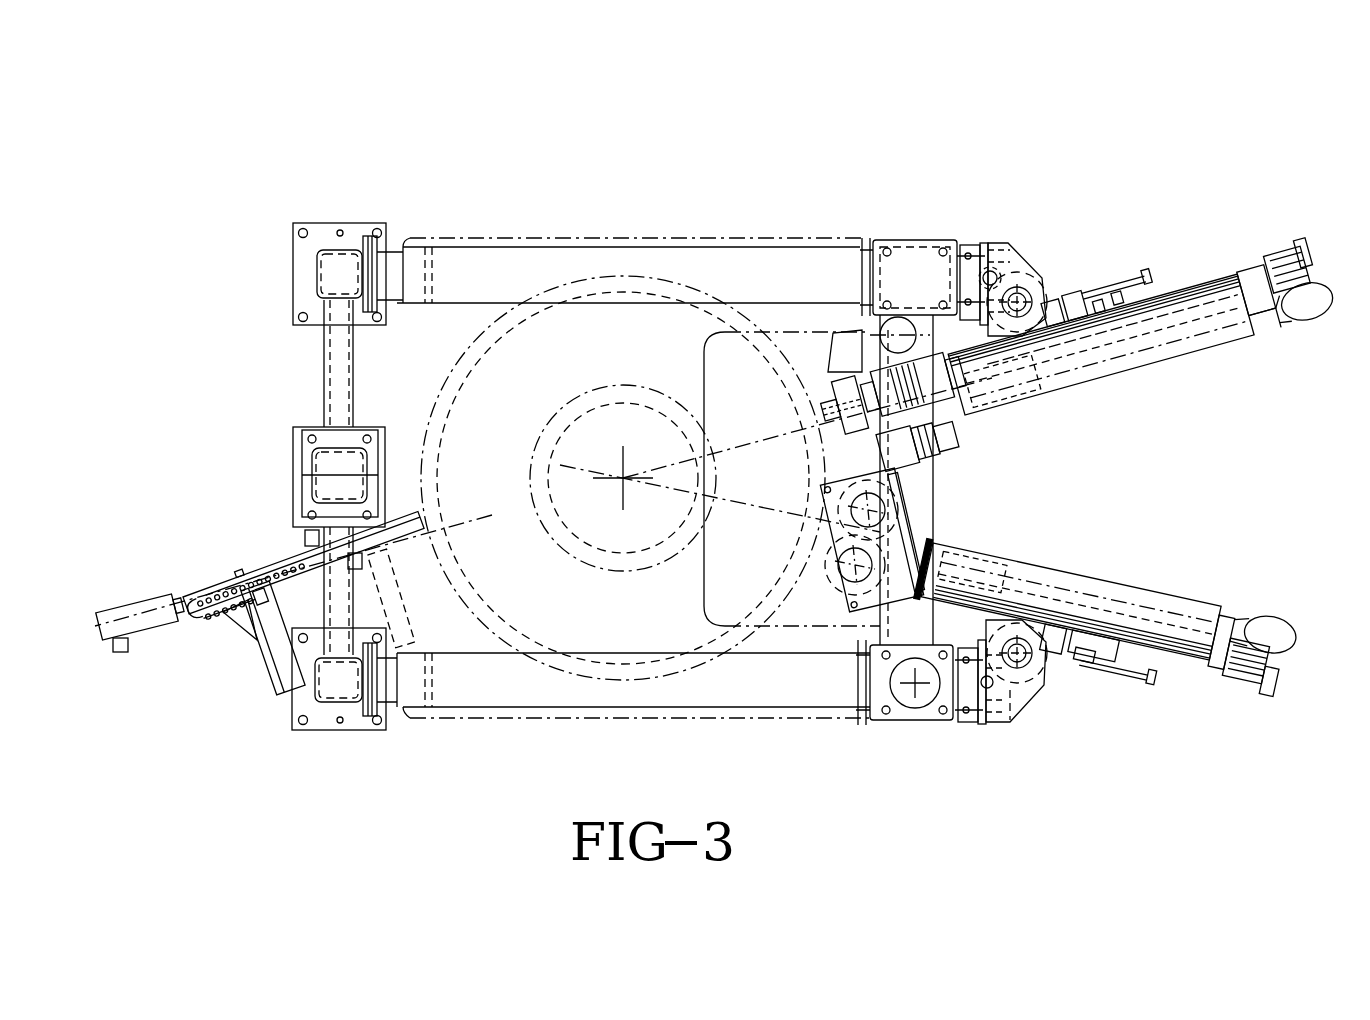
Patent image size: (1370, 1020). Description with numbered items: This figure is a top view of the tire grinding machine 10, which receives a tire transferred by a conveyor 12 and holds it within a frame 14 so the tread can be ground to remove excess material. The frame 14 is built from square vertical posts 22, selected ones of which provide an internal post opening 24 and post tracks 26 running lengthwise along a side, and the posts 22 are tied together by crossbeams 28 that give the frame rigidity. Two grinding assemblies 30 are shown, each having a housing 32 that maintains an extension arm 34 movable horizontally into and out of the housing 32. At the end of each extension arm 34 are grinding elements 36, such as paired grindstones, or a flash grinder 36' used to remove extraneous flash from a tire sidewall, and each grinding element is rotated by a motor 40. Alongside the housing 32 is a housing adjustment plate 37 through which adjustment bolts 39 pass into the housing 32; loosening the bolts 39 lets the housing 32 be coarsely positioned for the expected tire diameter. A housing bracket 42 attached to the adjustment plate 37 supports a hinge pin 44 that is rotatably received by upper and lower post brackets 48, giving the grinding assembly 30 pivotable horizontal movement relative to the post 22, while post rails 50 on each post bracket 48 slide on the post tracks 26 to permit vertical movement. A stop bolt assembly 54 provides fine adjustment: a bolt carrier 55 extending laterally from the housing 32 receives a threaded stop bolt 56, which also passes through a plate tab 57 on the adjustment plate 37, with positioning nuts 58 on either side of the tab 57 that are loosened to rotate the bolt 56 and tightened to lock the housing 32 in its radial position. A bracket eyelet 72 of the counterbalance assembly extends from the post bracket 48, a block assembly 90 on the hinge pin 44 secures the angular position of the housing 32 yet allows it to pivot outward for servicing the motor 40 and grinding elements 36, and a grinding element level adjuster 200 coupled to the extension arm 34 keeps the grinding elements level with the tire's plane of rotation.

The tire grinding machine 10 is at (592, 166).
The conveyor 12 is at (468, 312).
The frame 14 is at (703, 233).
The vertical post 22 is at (916, 240).
The internal post opening 24 is at (905, 268).
The post track 26 is at (975, 262).
The crossbeam 28 is at (488, 245).
The grinding assembly 30 is at (1243, 248).
The housing 32 is at (1232, 345).
The extension arm 34 is at (925, 547).
The grinding element 36 is at (827, 540).
The flash grinder 36' is at (792, 384).
The housing adjustment plate 37 is at (1060, 320).
The adjustment bolt 39 is at (1070, 315).
The motor 40 is at (932, 400).
The housing bracket 42 is at (1050, 315).
The hinge pin 44 is at (1020, 295).
The post bracket 48 is at (990, 250).
The post rail 50 is at (988, 245).
The stop bolt assembly 54 is at (1150, 662).
The bolt carrier 55 is at (1105, 290).
The stop bolt 56 is at (1130, 290).
The plate tab 57 is at (1045, 300).
The positioning nut 58 is at (1057, 300).
The bracket eyelet 72 is at (960, 292).
The block assembly 90 is at (1070, 680).
The grinding element level adjuster 200 is at (950, 514).